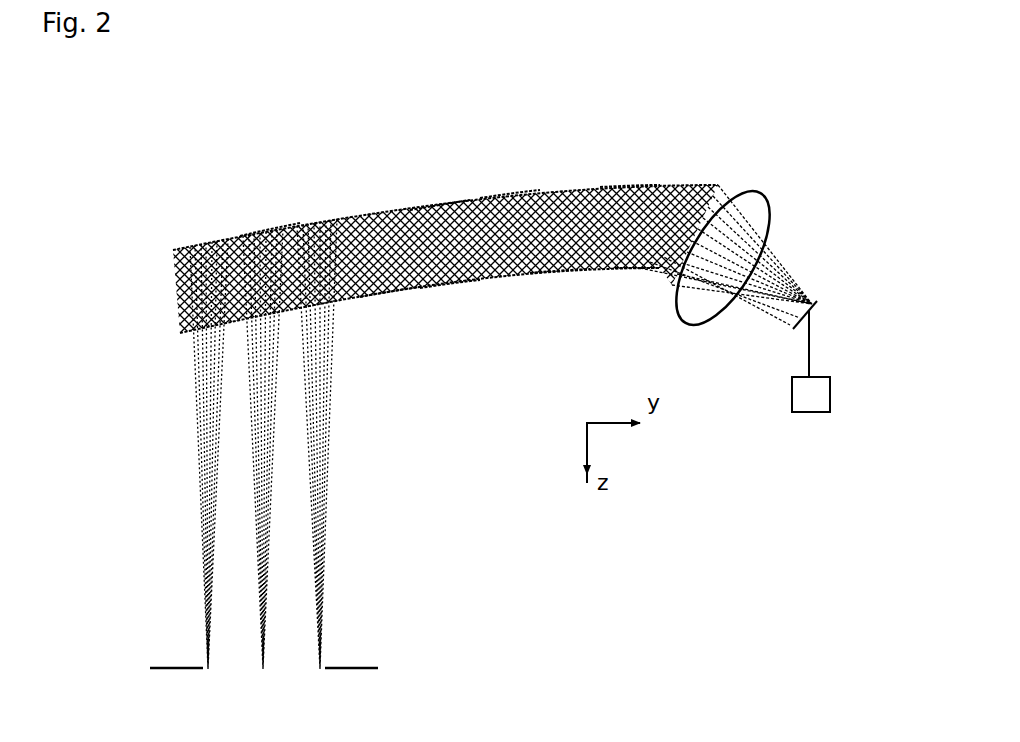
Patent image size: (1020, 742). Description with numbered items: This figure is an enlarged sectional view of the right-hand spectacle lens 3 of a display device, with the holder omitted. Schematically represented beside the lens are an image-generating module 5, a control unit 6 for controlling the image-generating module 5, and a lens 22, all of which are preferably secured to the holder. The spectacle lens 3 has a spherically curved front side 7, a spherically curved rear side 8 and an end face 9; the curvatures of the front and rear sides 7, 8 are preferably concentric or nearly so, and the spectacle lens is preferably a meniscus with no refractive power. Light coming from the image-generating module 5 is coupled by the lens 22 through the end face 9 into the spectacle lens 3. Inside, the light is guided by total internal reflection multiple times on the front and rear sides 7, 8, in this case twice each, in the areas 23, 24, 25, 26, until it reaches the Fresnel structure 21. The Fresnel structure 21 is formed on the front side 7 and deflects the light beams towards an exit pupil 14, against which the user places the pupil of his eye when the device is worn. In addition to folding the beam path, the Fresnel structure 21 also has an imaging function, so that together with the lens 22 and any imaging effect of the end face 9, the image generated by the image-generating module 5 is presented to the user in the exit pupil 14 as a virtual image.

The spectacle lens 3 is at (184, 332).
The Fresnel structure 21 is at (268, 218).
The area 25 is at (438, 205).
The front side 7 is at (503, 190).
The area 23 is at (625, 185).
The lens 22 is at (751, 187).
The image-generating module 5 is at (800, 330).
The control unit 6 is at (802, 413).
The rear side 8 is at (448, 287).
The area 24 is at (550, 272).
The end face 9 is at (640, 258).
The area 26 is at (387, 303).
The exit pupil 14 is at (296, 668).